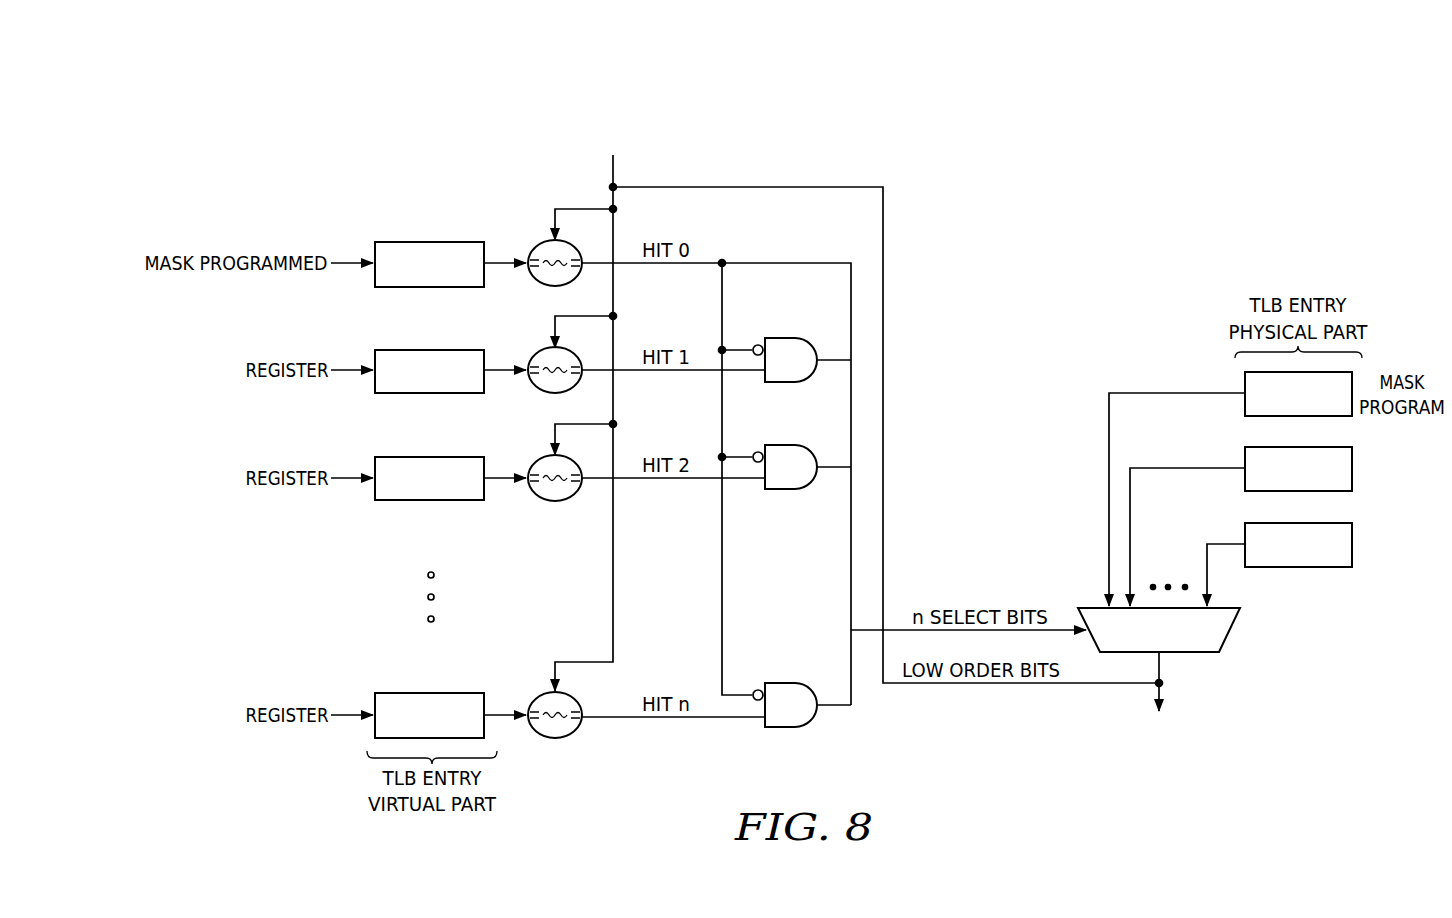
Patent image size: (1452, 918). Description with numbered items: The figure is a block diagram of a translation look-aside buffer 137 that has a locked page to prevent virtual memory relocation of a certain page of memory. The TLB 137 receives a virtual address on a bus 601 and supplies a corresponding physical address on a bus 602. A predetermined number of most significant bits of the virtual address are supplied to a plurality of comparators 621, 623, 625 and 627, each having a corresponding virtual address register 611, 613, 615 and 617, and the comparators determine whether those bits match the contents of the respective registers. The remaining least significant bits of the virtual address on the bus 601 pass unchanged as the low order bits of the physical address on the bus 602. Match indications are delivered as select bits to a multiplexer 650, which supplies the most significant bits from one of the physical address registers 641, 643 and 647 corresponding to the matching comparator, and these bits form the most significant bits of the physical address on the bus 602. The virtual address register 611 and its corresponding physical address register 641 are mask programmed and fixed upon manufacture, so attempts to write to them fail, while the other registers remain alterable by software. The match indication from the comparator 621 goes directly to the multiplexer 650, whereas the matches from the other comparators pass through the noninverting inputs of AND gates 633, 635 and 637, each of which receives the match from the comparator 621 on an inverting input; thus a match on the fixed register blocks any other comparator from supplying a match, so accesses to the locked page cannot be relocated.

The translation look-aside buffer 137 is at (1040, 145).
The virtual address bus 601 is at (848, 396).
The physical address bus 602 is at (1160, 711).
The fixed virtual address register 611 is at (430, 242).
The virtual address register 613 is at (430, 350).
The virtual address register 615 is at (430, 457).
The virtual address register 617 is at (430, 693).
The comparator 621 is at (537, 244).
The comparator 623 is at (537, 352).
The comparator 625 is at (553, 501).
The comparator 627 is at (553, 738).
The AND gate 633 is at (793, 337).
The AND gate 635 is at (793, 490).
The AND gate 637 is at (793, 727).
The fixed physical address register 641 is at (1245, 403).
The physical address register 643 is at (1352, 468).
The physical address register 647 is at (1352, 544).
The multiplexer 650 is at (1236, 627).